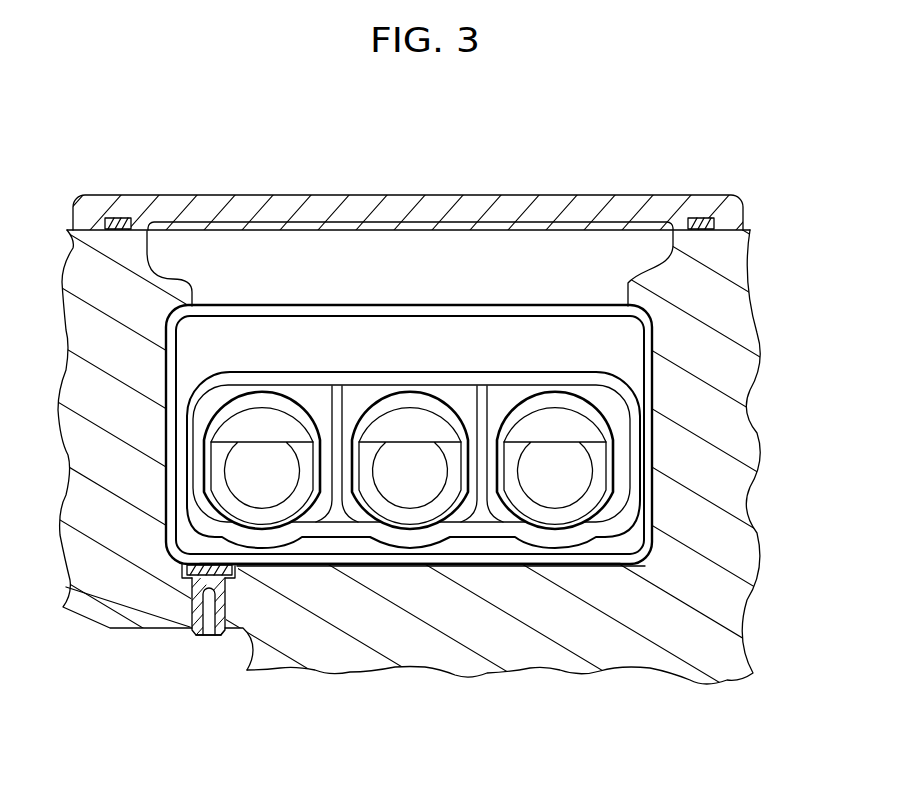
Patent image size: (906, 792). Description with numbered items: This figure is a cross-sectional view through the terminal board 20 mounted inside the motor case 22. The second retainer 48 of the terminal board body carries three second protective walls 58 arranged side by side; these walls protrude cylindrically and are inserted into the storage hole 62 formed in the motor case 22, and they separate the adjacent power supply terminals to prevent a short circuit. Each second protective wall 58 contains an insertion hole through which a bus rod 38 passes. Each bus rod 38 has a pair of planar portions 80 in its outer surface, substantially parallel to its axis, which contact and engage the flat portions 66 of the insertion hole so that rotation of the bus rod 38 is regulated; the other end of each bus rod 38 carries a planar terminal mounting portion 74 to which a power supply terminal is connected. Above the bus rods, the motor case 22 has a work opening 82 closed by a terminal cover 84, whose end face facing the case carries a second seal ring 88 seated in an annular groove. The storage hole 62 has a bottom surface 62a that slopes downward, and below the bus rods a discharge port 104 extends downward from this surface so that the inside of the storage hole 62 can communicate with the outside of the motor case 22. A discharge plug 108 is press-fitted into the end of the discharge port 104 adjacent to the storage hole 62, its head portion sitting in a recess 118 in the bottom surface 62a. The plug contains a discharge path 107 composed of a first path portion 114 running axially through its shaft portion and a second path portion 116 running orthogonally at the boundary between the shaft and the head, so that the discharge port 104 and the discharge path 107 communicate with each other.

The terminal board 20 is at (513, 298).
The motor case 22 is at (741, 544).
The bus rod 38 is at (267, 454).
The second retainer 48 is at (549, 374).
The second protective wall 58 is at (488, 400).
The storage hole 62 is at (618, 367).
The bottom surface of the storage hole 62a is at (486, 566).
The flat portion 66 is at (303, 437).
The terminal mounting portion 74 is at (246, 440).
The planar portion 80 is at (208, 491).
The work opening 82 is at (193, 291).
The terminal cover 84 is at (594, 203).
The second seal ring 88 is at (702, 218).
The discharge port 104 is at (208, 603).
The discharge path 107 is at (226, 584).
The discharge plug 108 is at (214, 639).
The first path portion 114 is at (209, 632).
The second path portion 116 is at (230, 585).
The recess 118 is at (195, 584).